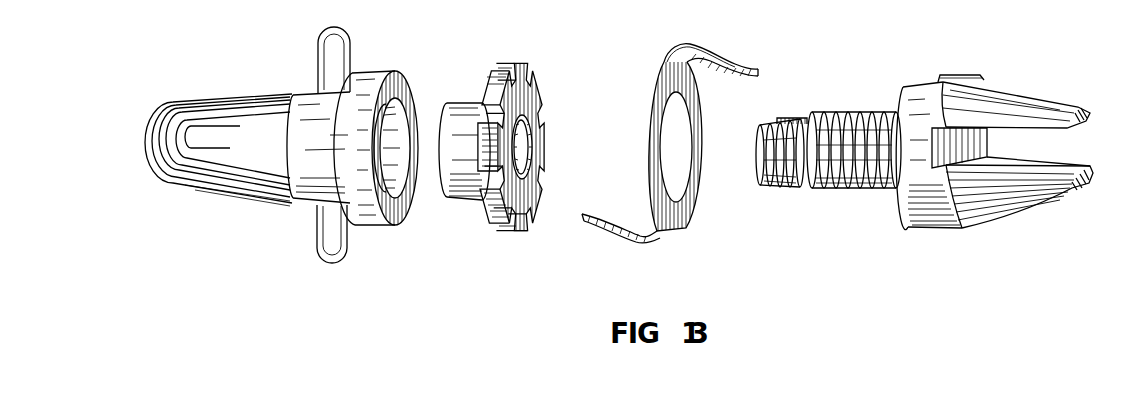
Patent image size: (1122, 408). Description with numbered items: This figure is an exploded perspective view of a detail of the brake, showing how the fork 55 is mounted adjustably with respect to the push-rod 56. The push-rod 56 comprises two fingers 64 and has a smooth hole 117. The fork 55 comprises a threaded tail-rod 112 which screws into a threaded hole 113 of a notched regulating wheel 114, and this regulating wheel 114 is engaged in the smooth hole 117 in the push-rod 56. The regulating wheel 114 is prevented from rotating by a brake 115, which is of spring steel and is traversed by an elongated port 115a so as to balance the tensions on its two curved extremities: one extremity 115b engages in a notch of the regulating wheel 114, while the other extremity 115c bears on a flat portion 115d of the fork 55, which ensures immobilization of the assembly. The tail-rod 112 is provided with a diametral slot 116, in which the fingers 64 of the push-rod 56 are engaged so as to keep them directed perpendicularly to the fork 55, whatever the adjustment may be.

The fork 55 is at (994, 140).
The push-rod 56 is at (229, 101).
The fingers 64 is at (322, 60).
The threaded tail-rod 112 is at (822, 190).
The threaded hole 113 is at (527, 150).
The notched regulating wheel 114 is at (520, 201).
The brake 115 is at (678, 148).
The elongated port 115a is at (688, 126).
The extremity 115b is at (622, 228).
The extremity 115c is at (733, 65).
The flat portion 115d is at (968, 75).
The diametral slot 116 is at (797, 118).
The smooth hole 117 is at (400, 108).